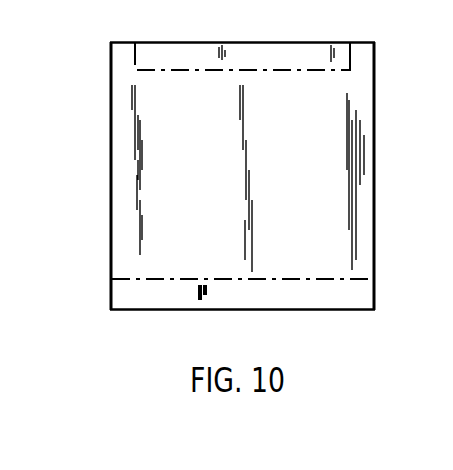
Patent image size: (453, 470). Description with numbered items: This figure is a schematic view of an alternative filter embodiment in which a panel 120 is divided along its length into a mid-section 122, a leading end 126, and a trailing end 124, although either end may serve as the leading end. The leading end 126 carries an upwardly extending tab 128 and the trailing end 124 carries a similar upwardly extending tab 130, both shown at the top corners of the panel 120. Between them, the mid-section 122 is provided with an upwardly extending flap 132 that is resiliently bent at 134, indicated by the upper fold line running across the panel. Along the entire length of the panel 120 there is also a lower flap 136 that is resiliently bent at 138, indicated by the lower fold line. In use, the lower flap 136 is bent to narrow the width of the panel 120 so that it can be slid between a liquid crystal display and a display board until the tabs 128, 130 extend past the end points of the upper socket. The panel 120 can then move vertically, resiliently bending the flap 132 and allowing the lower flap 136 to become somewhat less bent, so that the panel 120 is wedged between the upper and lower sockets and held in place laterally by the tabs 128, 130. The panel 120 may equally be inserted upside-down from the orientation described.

The panel 120 is at (373, 159).
The mid-section 122 is at (122, 228).
The trailing end 124 is at (373, 193).
The leading end 126 is at (122, 160).
The upwardly extending tab 128 is at (114, 74).
The upwardly extending tab 130 is at (364, 62).
The upper flap 132 is at (197, 53).
The bend of upper flap 134 is at (249, 66).
The lower flap 136 is at (311, 300).
The bend of lower flap 138 is at (160, 290).